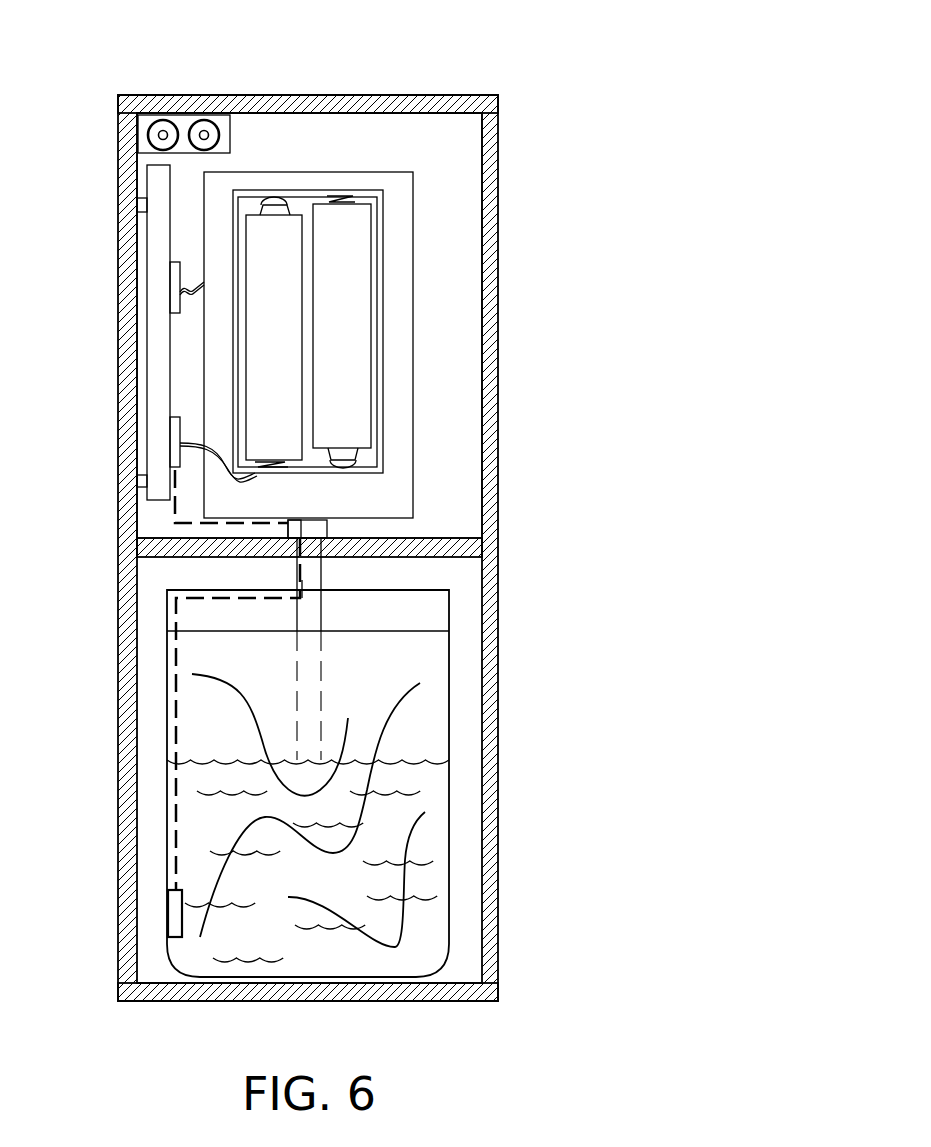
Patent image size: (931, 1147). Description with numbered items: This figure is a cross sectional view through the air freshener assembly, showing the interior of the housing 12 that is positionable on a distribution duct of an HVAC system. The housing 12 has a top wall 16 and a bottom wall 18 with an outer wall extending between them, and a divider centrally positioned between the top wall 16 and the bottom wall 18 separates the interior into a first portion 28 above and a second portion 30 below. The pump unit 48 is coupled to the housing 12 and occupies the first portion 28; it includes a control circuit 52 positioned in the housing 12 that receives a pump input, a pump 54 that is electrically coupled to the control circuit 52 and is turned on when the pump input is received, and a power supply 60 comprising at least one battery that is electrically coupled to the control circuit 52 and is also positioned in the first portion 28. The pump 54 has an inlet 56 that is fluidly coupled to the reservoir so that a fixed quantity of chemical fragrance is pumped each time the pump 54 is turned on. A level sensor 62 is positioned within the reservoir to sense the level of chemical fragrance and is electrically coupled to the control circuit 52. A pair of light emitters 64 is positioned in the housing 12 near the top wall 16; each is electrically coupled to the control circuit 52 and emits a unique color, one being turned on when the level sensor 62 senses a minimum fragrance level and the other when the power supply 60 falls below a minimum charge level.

The housing 12 is at (498, 97).
The top wall 16 is at (378, 97).
The bottom wall 18 is at (190, 1001).
The first portion 28 is at (308, 127).
The second portion 30 is at (470, 680).
The pump unit 48 is at (438, 304).
The control circuit 52 is at (170, 190).
The pump 54 is at (413, 210).
The inlet 56 is at (320, 574).
The power supply 60 is at (378, 397).
The level sensor 62 is at (182, 899).
The light emitters 64 is at (150, 124).